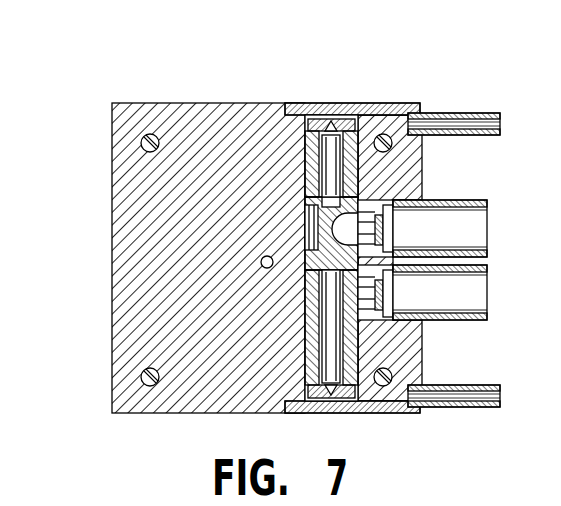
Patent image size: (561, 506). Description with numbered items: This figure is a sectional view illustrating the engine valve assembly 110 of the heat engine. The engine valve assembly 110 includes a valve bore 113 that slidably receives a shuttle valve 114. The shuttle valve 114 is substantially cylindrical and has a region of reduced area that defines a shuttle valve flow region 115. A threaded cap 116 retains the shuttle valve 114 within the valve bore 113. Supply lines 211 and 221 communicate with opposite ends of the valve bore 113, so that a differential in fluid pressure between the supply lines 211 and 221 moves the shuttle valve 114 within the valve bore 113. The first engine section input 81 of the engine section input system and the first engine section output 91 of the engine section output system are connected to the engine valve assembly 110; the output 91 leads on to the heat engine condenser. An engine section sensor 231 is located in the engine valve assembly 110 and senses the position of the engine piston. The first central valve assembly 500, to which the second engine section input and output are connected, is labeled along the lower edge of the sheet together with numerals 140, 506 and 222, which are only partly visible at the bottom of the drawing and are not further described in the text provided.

The engine valve assembly 110 is at (113, 412).
The shuttle valve 114 is at (306, 160).
The threaded cap 116 is at (316, 106).
The supply line 211 is at (456, 116).
The shuttle valve flow region 115 is at (393, 210).
The first engine section input 81 is at (478, 221).
The first engine section output 91 is at (478, 288).
The engine section sensor 231 is at (261, 260).
The valve bore 113 is at (349, 358).
The supply line 221 is at (470, 408).
The first central valve assembly 500 is at (119, 499).
The component 140 is at (182, 499).
The component 506 is at (369, 499).
The component 222 is at (452, 499).